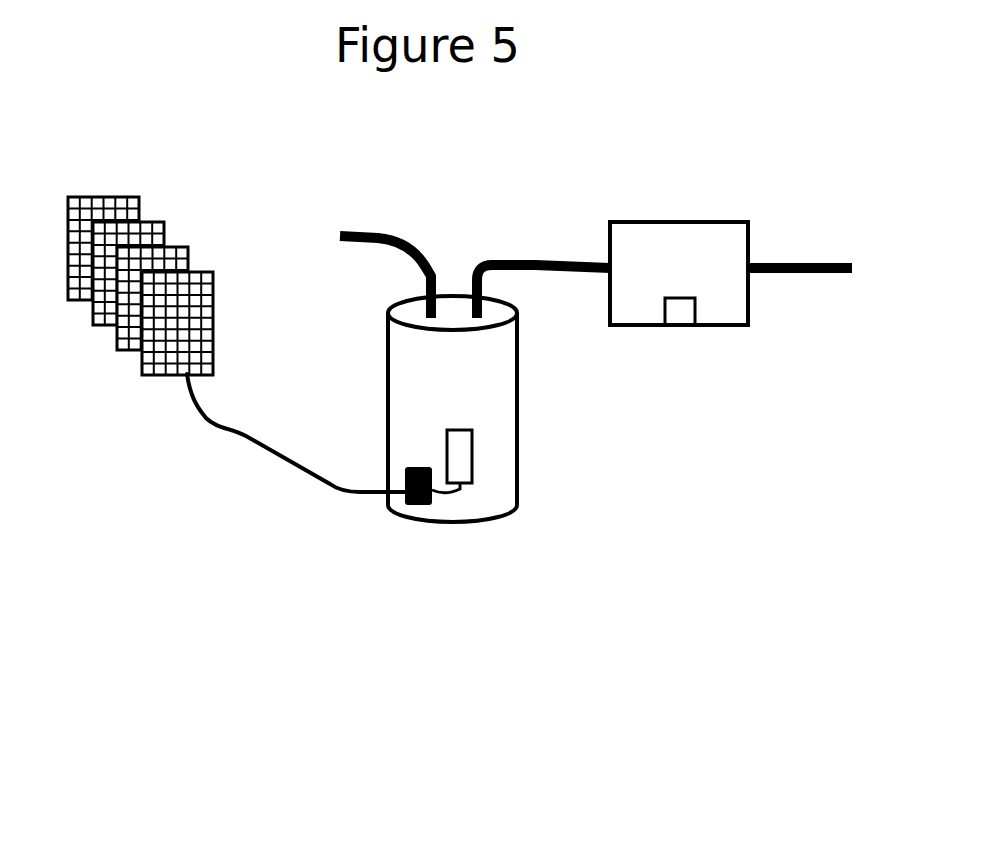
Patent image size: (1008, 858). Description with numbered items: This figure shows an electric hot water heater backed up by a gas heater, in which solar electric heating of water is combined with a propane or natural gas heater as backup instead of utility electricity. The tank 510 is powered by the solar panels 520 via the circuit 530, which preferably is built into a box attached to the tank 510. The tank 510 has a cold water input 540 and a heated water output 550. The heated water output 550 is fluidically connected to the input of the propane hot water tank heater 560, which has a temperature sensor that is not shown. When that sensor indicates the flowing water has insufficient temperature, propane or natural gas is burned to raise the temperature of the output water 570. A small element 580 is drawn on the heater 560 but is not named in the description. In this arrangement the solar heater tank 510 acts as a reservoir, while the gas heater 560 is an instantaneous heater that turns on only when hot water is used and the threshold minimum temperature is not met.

The tank 510 is at (487, 522).
The solar panels 520 is at (120, 348).
The circuit 530 is at (417, 505).
The cold water input 540 is at (378, 238).
The heated water output 550 is at (548, 260).
The propane hot water tank heater 560 is at (680, 222).
The output water 570 is at (822, 278).
The sensor / port 580 is at (680, 315).